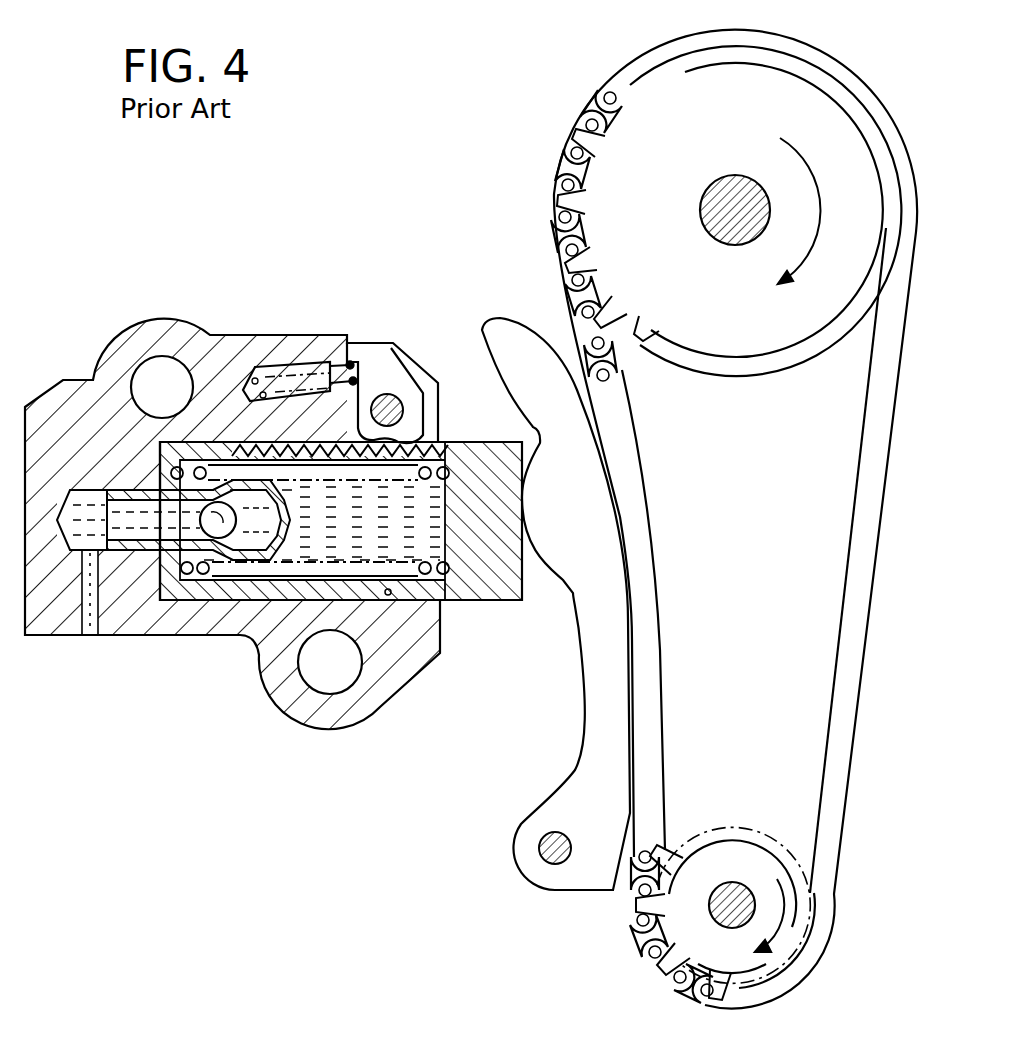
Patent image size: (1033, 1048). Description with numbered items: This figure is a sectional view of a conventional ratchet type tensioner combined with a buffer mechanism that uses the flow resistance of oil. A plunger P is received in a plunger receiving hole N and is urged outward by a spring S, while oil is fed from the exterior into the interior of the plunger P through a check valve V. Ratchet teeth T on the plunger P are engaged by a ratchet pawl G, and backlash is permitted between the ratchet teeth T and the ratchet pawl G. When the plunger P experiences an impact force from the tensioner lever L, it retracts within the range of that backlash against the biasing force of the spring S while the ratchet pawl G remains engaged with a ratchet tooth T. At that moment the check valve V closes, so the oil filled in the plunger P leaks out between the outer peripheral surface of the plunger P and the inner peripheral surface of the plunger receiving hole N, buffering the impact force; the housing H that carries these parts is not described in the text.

The tensioner housing H is at (205, 633).
The plunger P is at (500, 603).
The plunger spring S is at (417, 480).
The check valve V is at (268, 527).
The oil passage N is at (388, 593).
The ratchet pawl G is at (373, 363).
The pawl spring T is at (262, 452).
The tensioner lever L is at (602, 530).